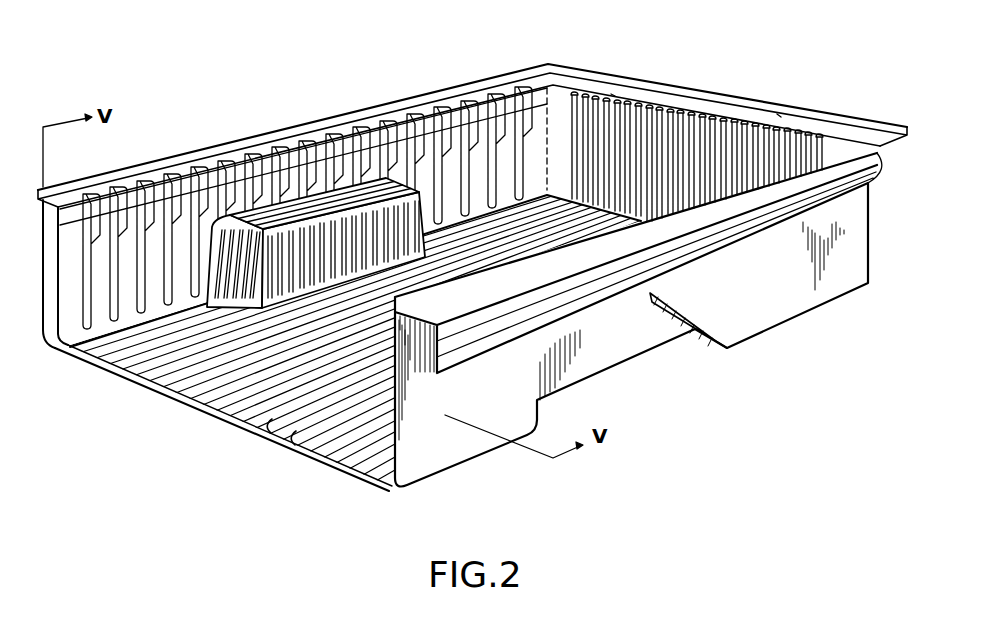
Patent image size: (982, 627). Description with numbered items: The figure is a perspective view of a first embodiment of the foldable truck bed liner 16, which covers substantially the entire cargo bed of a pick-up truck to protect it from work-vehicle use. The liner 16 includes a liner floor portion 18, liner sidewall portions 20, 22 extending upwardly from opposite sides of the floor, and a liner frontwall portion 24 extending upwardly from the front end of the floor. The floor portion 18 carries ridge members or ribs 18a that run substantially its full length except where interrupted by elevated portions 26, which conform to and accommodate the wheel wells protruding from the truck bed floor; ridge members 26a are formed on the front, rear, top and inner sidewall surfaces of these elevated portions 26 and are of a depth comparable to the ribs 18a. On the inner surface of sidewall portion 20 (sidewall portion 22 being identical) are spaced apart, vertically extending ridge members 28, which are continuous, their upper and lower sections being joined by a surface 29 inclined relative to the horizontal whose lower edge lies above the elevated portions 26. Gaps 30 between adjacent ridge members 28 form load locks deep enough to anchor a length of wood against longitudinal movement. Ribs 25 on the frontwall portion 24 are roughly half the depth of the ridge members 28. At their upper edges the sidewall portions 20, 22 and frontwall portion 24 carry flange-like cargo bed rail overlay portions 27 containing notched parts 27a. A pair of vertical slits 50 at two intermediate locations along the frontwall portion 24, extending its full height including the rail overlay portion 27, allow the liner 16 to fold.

The foldable truck bed liner 16 is at (190, 418).
The liner floor portion 18 is at (247, 429).
The ridge members or ribs 18a is at (276, 446).
The liner sidewall portion 20 is at (43, 208).
The liner sidewall portion 22 is at (763, 308).
The liner frontwall portion 24 is at (745, 92).
The ridge members or ribs 25 is at (670, 110).
The elevated portions 26 is at (318, 182).
The ridge members 26a is at (243, 176).
The cargo bed rail overlay portions 27 is at (471, 90).
The notched parts 27a is at (522, 86).
The ridge members 28 is at (187, 166).
The inclined surface 29 is at (133, 205).
The gaps 30 is at (458, 102).
The vertical slits 50 is at (780, 116).